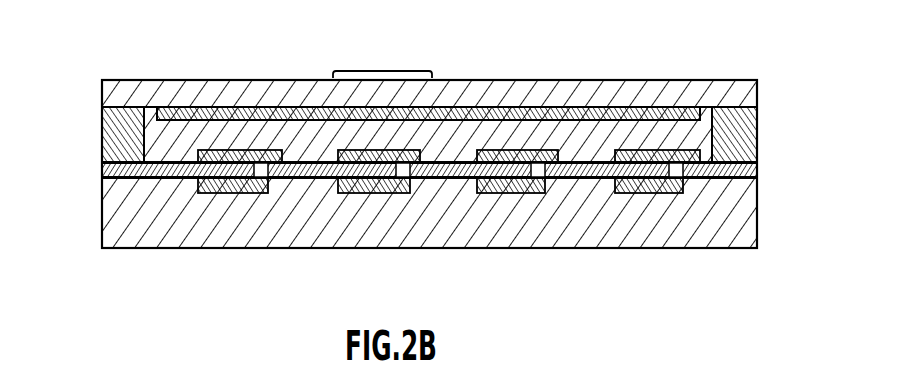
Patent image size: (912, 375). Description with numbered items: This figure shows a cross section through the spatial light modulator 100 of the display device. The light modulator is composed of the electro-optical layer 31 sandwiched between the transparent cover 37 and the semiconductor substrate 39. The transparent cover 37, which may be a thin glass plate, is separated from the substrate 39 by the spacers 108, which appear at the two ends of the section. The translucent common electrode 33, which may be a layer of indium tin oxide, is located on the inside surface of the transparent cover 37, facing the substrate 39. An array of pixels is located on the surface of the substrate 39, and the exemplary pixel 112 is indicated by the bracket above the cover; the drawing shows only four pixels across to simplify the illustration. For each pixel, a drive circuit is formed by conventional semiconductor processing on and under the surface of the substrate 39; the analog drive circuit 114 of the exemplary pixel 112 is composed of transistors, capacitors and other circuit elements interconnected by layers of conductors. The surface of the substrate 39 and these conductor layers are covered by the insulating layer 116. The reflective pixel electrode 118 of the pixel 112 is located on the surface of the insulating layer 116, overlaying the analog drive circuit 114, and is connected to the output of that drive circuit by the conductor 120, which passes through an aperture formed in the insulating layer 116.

The spatial light modulator 100 is at (758, 80).
The transparent cover 37 is at (188, 81).
The translucent common electrode 33 is at (548, 108).
The reflective pixel electrode 118 is at (440, 113).
The spacers 108 is at (112, 135).
The insulating layer 116 is at (742, 172).
The conductor 120 is at (407, 174).
The semiconductor substrate 39 is at (737, 217).
The analog drive circuit 114 is at (378, 194).
The pixel 112 is at (381, 70).
The electro-optical layer 31 is at (712, 107).